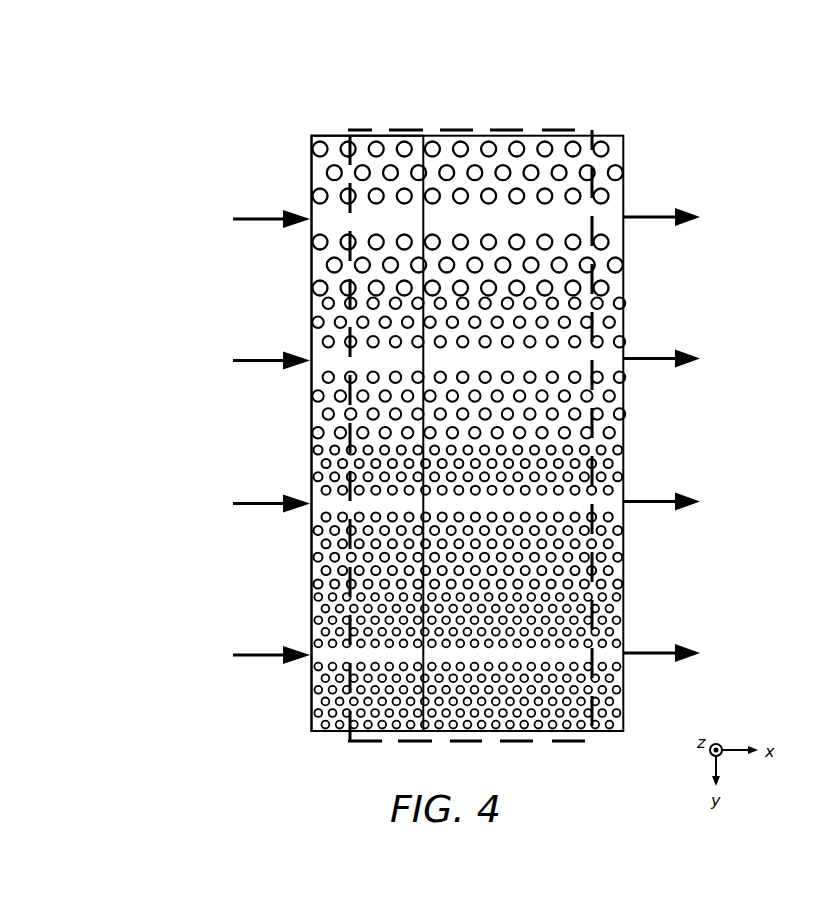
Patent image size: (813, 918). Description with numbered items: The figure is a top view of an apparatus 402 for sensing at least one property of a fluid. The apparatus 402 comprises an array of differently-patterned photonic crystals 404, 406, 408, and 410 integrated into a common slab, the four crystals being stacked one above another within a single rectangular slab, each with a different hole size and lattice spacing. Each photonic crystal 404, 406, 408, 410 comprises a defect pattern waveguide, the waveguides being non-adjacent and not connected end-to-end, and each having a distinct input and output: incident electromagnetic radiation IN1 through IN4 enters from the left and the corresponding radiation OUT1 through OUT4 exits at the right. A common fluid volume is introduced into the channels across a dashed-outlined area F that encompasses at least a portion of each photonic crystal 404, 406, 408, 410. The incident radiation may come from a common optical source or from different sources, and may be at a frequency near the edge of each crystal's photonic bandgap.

The apparatus 402 is at (302, 119).
The photonic crystal 404 is at (163, 144).
The photonic crystal 406 is at (163, 305).
The photonic crystal 408 is at (163, 452).
The photonic crystal 410 is at (163, 590).
The area F is at (468, 128).